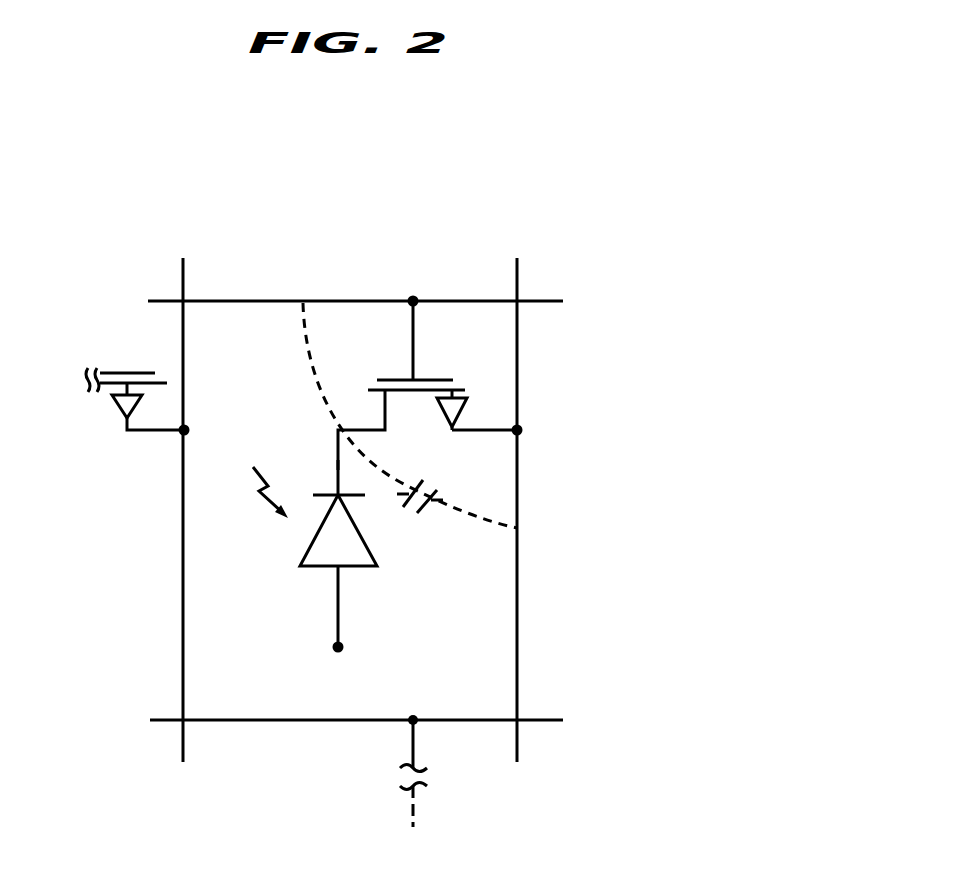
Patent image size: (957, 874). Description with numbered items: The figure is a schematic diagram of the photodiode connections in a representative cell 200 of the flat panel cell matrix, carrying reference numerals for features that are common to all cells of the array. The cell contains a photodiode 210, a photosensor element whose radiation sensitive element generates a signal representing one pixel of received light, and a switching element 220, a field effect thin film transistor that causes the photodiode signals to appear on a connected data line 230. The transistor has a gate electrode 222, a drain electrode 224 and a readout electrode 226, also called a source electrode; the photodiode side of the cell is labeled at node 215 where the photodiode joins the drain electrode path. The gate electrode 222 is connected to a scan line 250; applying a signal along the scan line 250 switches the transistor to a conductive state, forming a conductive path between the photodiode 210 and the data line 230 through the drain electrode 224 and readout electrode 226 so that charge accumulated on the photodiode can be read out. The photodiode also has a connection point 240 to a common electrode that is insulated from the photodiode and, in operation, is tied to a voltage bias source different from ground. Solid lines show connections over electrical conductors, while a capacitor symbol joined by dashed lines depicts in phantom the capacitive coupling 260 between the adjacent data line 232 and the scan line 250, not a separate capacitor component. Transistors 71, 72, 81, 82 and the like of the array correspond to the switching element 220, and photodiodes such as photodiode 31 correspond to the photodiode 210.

The representative cell 200 is at (476, 188).
The photodiode 210 is at (310, 572).
The photodiode cathode node 215 is at (337, 470).
The switching element 220 is at (398, 355).
The gate electrode 222 is at (412, 342).
The drain electrode 224 is at (382, 407).
The readout electrode 226 is at (455, 422).
The data line 230 is at (517, 740).
The data line 232 is at (183, 740).
The connection point 240 is at (342, 650).
The scan line 250 is at (527, 302).
The capacitive coupling 260 is at (303, 343).
The transistor 71 is at (412, 395).
The transistor 72 is at (487, 430).
The transistor 81 is at (487, 430).
The transistor 82 is at (487, 430).
The photodiode 31 is at (368, 577).